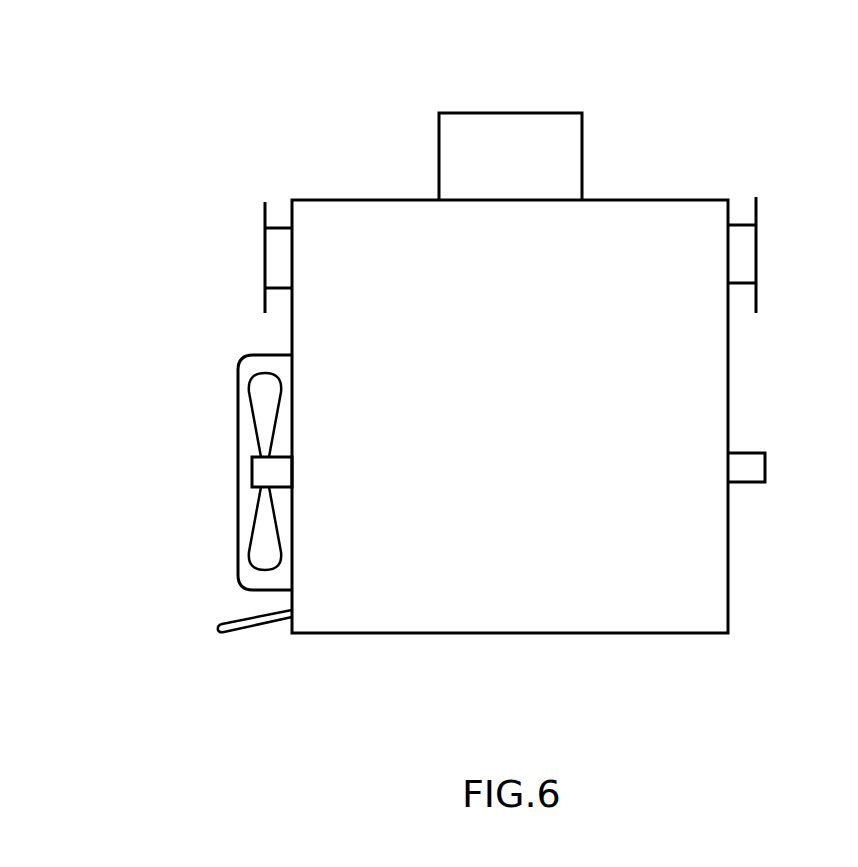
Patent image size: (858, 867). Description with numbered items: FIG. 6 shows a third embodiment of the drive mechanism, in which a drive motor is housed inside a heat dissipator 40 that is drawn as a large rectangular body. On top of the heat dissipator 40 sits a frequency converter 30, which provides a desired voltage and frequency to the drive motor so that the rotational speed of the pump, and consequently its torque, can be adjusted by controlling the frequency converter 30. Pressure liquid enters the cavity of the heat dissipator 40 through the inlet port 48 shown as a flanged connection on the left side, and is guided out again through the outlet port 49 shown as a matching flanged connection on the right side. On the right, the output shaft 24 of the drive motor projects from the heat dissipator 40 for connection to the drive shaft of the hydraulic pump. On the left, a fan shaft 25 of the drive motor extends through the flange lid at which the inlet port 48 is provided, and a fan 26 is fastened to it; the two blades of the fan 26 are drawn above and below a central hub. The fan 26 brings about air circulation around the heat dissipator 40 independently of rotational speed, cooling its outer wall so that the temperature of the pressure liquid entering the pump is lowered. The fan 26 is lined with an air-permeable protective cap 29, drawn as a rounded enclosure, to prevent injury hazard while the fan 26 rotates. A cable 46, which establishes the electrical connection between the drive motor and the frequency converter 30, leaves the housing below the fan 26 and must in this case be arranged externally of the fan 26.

The heat dissipator 40 is at (648, 583).
The frequency converter 30 is at (510, 147).
The inlet port 48 is at (280, 248).
The outlet port 49 is at (742, 242).
The output shaft 24 is at (748, 470).
The air-permeable protective cap 29 is at (239, 472).
The fan 26 is at (260, 552).
The fan shaft 25 is at (283, 475).
The cable 46 is at (228, 631).